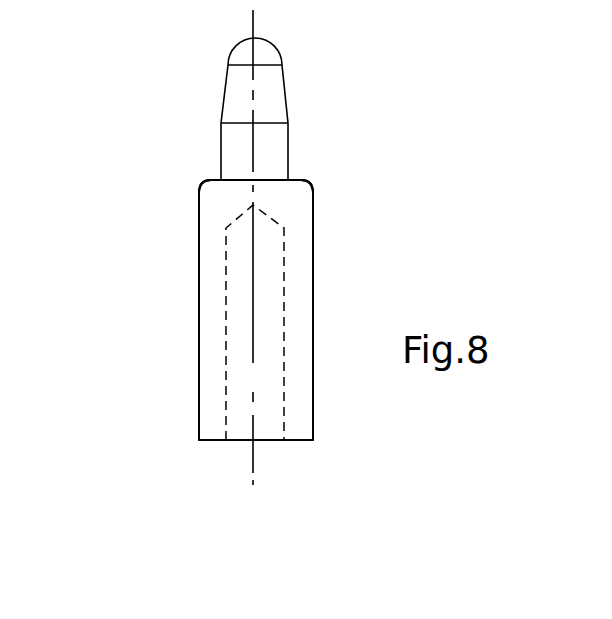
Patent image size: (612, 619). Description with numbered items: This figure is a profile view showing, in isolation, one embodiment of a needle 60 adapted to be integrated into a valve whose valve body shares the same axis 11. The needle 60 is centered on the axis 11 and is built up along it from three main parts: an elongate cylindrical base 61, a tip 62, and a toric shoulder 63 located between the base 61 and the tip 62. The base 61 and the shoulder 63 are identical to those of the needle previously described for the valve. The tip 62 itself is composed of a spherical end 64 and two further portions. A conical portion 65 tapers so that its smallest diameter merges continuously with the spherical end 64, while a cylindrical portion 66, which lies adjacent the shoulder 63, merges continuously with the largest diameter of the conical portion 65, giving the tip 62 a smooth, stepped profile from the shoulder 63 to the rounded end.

The axis 11 is at (253, 17).
The needle 60 is at (182, 333).
The elongate cylindrical base 61 is at (199, 236).
The tip 62 is at (289, 108).
The toric shoulder 63 is at (308, 185).
The spherical end 64 is at (277, 43).
The conical portion 65 is at (284, 70).
The cylindrical portion 66 is at (221, 145).